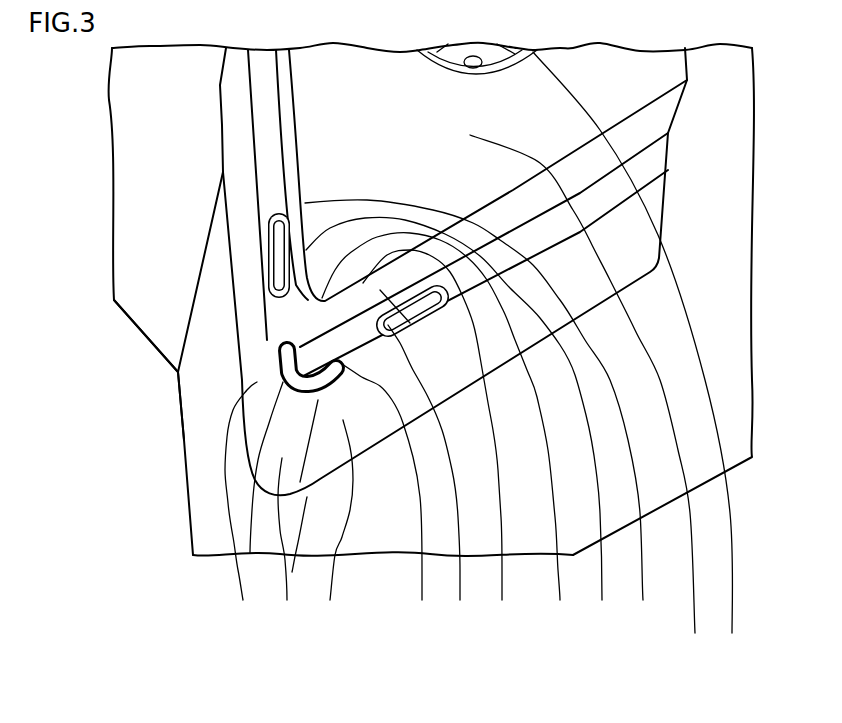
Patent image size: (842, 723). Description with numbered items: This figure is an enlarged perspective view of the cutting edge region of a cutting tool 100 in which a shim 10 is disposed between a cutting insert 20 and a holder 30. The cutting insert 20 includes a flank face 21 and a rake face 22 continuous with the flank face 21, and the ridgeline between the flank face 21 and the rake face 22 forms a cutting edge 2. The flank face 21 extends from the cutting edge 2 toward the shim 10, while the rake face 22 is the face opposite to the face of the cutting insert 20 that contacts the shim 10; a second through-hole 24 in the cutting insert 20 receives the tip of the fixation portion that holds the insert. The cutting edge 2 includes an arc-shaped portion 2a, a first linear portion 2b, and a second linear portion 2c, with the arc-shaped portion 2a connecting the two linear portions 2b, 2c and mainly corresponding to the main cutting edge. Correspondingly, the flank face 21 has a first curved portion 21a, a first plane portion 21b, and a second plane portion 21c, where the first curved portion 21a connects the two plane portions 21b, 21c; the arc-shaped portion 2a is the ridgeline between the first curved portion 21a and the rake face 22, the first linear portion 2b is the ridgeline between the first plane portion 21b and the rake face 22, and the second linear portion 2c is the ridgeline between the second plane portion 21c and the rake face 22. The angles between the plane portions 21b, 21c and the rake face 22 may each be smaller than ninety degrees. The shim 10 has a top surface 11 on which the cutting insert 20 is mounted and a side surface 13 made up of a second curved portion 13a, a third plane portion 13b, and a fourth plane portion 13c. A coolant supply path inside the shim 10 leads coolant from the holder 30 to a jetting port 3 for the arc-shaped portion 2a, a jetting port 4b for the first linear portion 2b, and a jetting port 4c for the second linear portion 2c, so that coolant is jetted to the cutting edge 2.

The joined structure 100 is at (125, 355).
The holder 30 is at (207, 427).
The jetting port for arc-shaped portion 3 is at (278, 358).
The jetting port for second linear portion 4c is at (266, 258).
The jetting port for first linear portion 4b is at (455, 305).
The shim 10 is at (455, 368).
The top surface 11 is at (315, 325).
The side surface 13 is at (288, 518).
The second curved portion 13a is at (287, 600).
The third plane portion 13b is at (333, 521).
The fourth plane portion 13c is at (243, 600).
The cutting insert 20 is at (526, 369).
The flank face 21 is at (435, 452).
The first curved portion 21a is at (422, 600).
The first plane portion 21b is at (400, 617).
The second plane portion 21c is at (460, 600).
The cutting edge 2 is at (484, 427).
The arc-shaped portion 2a is at (602, 600).
The first linear portion 2b is at (560, 600).
The second linear portion 2c is at (543, 617).
The rake face 22 is at (695, 633).
The second through-hole 24 is at (638, 353).